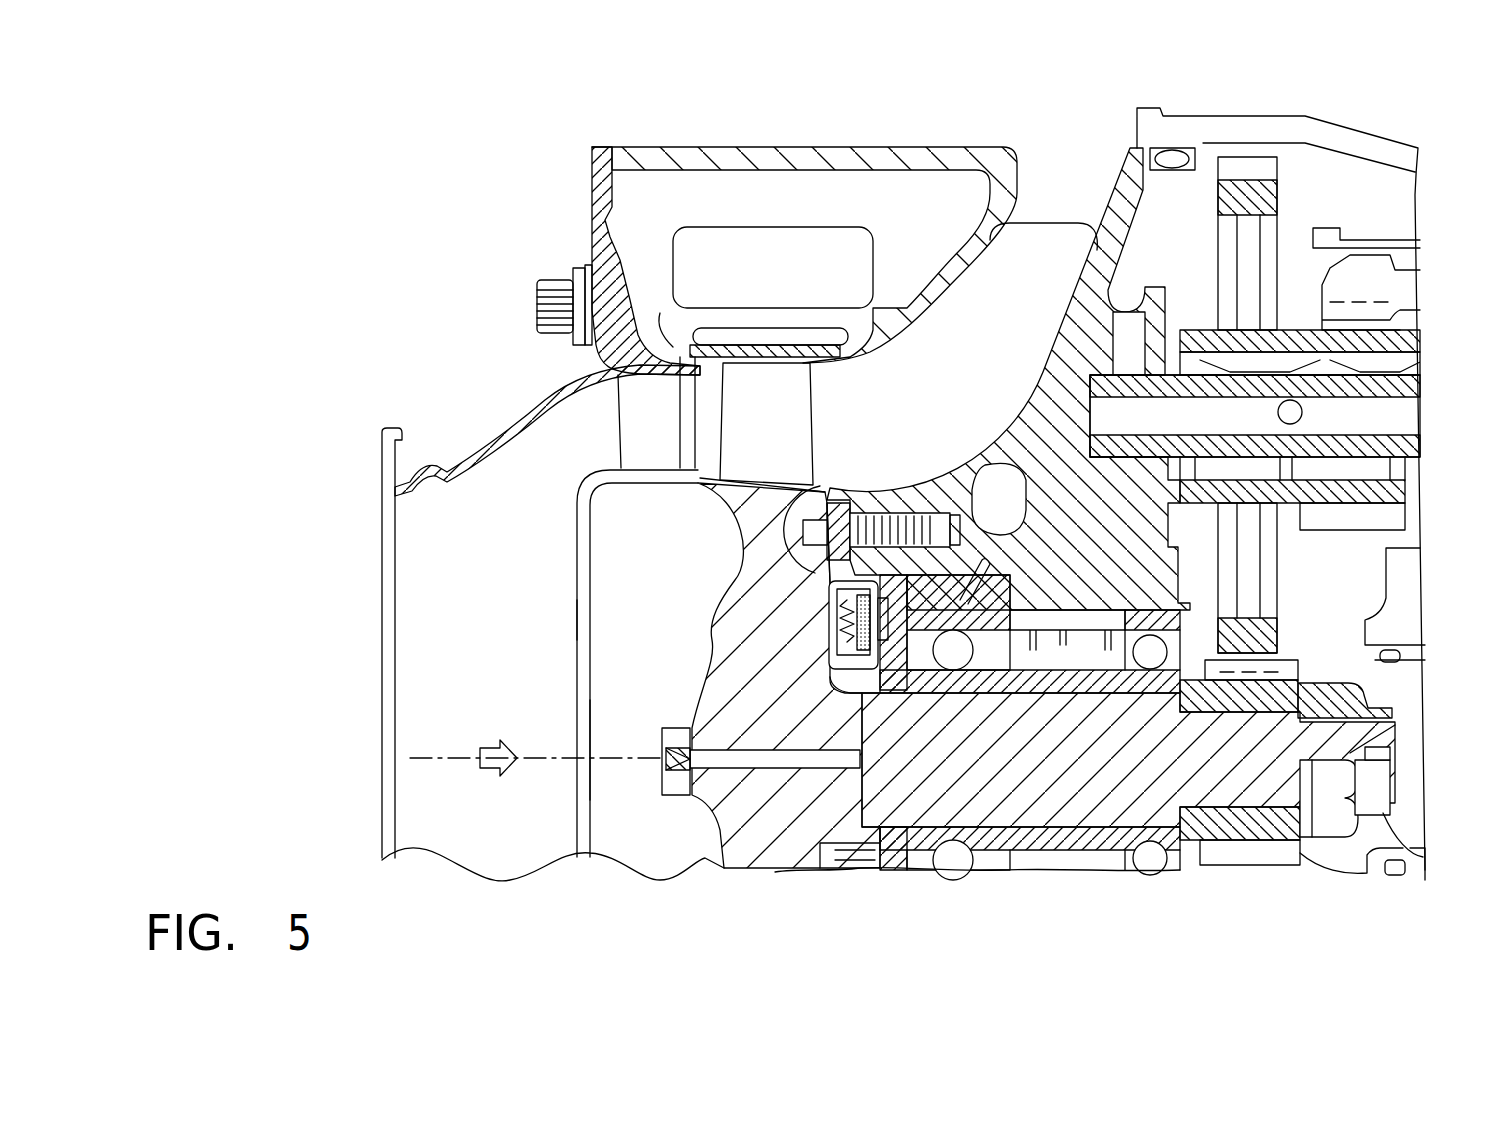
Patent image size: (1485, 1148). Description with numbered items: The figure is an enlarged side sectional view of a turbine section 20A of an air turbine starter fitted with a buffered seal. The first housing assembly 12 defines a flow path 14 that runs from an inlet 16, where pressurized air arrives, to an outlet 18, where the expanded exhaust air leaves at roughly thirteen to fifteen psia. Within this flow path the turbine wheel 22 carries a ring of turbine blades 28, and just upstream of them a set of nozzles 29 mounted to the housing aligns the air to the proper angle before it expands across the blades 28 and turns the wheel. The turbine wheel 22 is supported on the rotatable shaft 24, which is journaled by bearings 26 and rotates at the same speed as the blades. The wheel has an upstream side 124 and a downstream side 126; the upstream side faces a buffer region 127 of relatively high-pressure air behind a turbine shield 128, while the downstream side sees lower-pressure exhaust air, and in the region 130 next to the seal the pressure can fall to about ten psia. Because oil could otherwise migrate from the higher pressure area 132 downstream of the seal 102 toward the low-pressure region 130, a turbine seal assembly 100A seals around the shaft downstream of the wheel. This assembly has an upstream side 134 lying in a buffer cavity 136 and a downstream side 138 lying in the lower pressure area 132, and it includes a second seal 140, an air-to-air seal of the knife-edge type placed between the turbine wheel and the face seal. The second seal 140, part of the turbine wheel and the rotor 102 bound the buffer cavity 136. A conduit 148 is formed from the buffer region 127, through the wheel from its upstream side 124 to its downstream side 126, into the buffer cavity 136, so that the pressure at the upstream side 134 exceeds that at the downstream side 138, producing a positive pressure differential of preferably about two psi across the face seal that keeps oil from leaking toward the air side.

The first housing assembly 12 is at (830, 147).
The flow path 14 is at (483, 560).
The inlet 16 is at (500, 748).
The outlet 18 is at (1018, 298).
The turbine section 20A is at (700, 636).
The turbine wheel 22 is at (715, 674).
The rotatable shaft 24 is at (1425, 857).
The bearings 26 is at (1105, 698).
The turbine blades 28 is at (777, 400).
The nozzles 29 is at (668, 405).
The turbine seal assembly 100A is at (805, 600).
The seal 102 is at (1015, 700).
The upstream side 124 is at (680, 850).
The downstream side 126 is at (815, 885).
The buffer region 127 is at (662, 838).
The turbine shield 128 is at (575, 614).
The region 130 is at (792, 572).
The higher pressure area 132 is at (884, 572).
The upstream side 134 is at (868, 690).
The buffer cavity 136 is at (838, 690).
The downstream side 138 is at (900, 628).
The second seal 140 is at (808, 660).
The conduit 148 is at (770, 800).